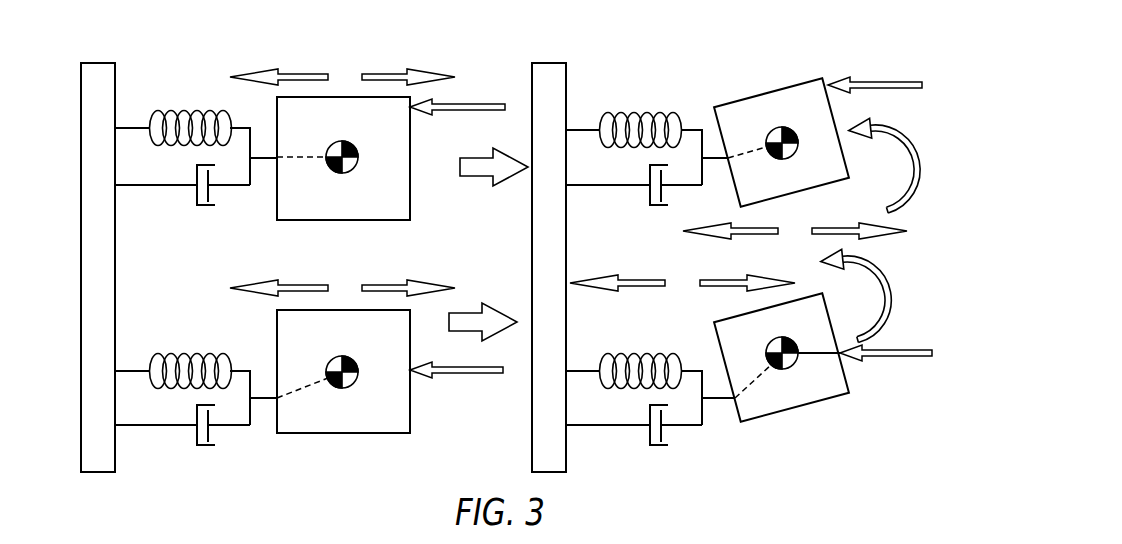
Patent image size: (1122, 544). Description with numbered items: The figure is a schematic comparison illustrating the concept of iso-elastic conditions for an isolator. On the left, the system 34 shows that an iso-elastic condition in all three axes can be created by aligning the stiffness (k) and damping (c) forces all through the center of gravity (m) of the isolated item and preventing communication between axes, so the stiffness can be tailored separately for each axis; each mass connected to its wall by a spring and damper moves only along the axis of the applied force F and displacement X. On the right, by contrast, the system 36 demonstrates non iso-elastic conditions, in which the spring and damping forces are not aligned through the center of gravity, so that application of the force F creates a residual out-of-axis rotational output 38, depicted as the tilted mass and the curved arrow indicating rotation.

The system 34 is at (293, 45).
The system 36 is at (772, 45).
The rotational output 38 is at (918, 166).